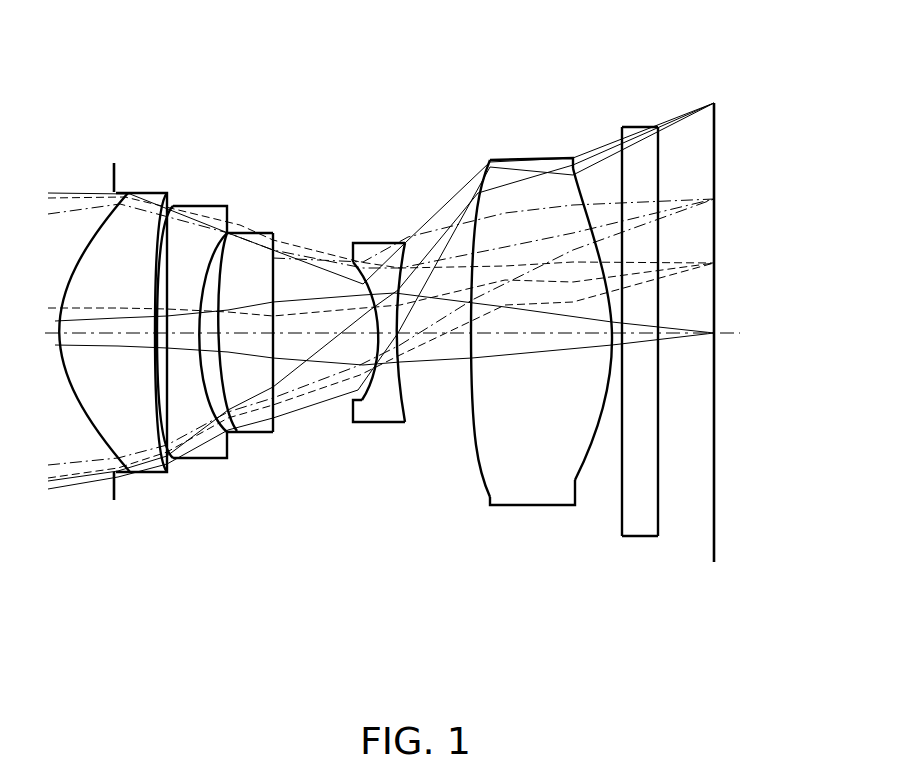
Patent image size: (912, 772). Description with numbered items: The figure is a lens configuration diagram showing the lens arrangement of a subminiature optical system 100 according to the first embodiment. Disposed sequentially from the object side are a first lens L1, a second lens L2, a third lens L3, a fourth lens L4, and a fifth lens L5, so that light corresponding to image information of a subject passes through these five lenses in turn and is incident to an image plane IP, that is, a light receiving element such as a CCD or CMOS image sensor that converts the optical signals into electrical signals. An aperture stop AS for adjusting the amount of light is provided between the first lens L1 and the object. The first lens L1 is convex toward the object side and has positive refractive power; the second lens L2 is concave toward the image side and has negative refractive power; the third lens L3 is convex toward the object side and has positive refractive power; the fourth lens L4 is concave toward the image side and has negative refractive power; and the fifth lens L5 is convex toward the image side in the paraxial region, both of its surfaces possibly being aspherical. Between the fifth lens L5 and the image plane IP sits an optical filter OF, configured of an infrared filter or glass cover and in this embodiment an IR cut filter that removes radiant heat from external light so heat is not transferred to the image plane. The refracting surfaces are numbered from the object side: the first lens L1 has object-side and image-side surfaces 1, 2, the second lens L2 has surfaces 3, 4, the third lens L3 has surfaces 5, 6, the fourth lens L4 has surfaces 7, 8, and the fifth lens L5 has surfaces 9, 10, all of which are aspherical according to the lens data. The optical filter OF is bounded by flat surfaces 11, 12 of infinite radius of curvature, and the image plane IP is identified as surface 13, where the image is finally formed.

The subminiature optical system 100 is at (758, 131).
The aperture stop AS is at (112, 180).
The first lens L1 is at (146, 453).
The second lens L2 is at (203, 453).
The third lens L3 is at (257, 427).
The fourth lens L4 is at (383, 413).
The fifth lens L5 is at (535, 493).
The optical filter OF is at (637, 527).
The image plane IP is at (715, 542).
The object-side surface of the first lens 1 is at (116, 195).
The image-side surface of the first lens 2 is at (160, 282).
The object-side surface of the second lens 3 is at (158, 275).
The image-side surface of the second lens 4 is at (205, 270).
The object-side surface of the third lens 5 is at (220, 264).
The image-side surface of the third lens 6 is at (278, 268).
The object-side surface of the fourth lens 7 is at (366, 298).
The image-side surface of the fourth lens 8 is at (402, 260).
The object-side surface of the fifth lens 9 is at (455, 185).
The image-side surface of the fifth lens 10 is at (575, 195).
The object-side surface of the optical filter 11 is at (622, 162).
The image-side surface of the optical filter 12 is at (657, 150).
The image plane surface 13 is at (713, 122).